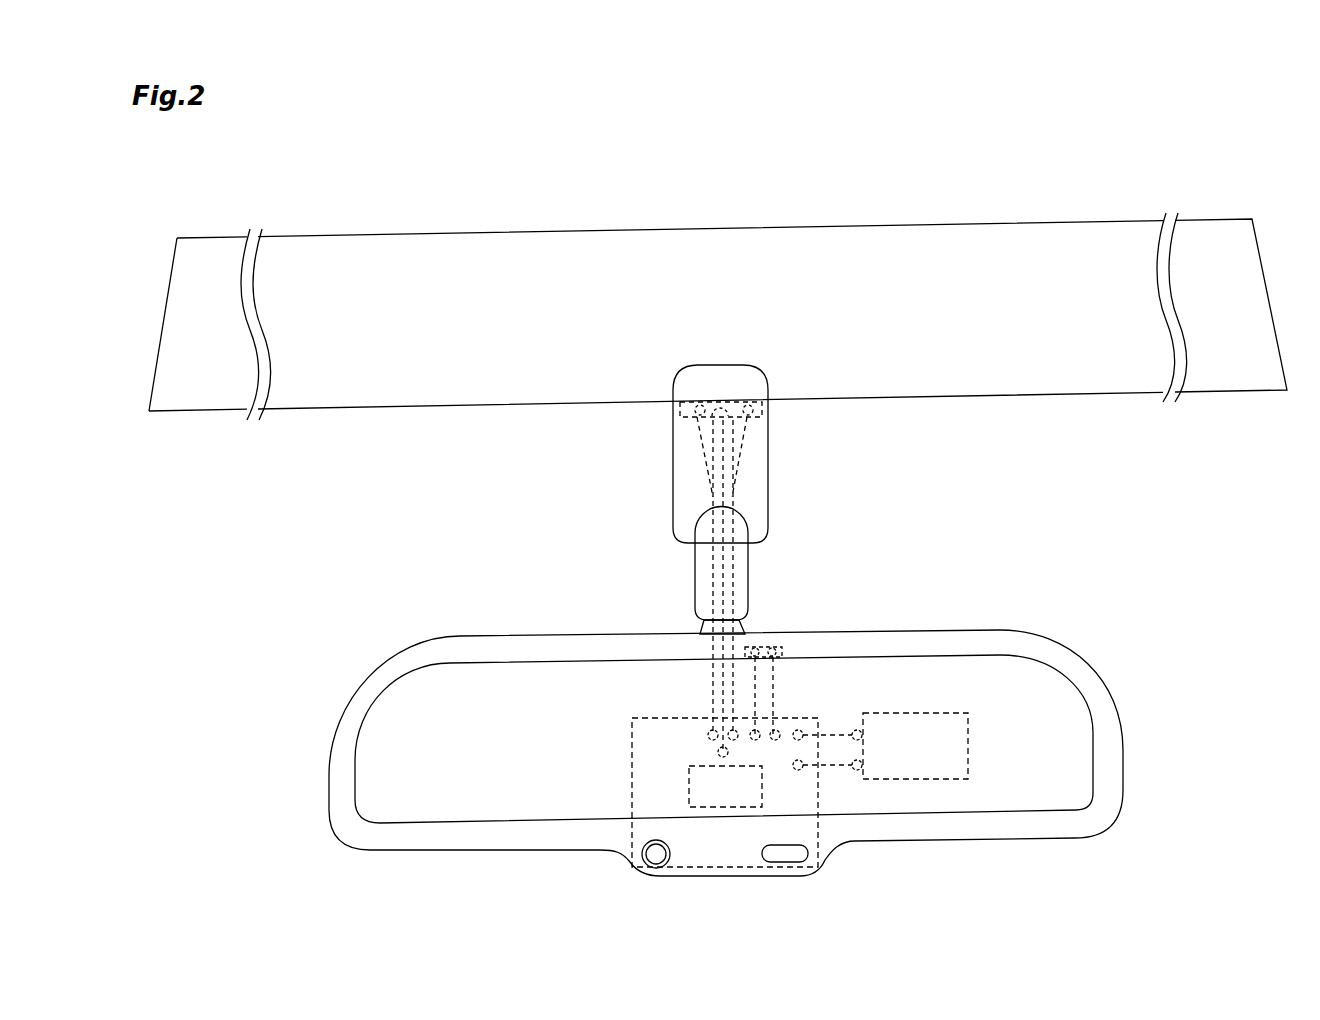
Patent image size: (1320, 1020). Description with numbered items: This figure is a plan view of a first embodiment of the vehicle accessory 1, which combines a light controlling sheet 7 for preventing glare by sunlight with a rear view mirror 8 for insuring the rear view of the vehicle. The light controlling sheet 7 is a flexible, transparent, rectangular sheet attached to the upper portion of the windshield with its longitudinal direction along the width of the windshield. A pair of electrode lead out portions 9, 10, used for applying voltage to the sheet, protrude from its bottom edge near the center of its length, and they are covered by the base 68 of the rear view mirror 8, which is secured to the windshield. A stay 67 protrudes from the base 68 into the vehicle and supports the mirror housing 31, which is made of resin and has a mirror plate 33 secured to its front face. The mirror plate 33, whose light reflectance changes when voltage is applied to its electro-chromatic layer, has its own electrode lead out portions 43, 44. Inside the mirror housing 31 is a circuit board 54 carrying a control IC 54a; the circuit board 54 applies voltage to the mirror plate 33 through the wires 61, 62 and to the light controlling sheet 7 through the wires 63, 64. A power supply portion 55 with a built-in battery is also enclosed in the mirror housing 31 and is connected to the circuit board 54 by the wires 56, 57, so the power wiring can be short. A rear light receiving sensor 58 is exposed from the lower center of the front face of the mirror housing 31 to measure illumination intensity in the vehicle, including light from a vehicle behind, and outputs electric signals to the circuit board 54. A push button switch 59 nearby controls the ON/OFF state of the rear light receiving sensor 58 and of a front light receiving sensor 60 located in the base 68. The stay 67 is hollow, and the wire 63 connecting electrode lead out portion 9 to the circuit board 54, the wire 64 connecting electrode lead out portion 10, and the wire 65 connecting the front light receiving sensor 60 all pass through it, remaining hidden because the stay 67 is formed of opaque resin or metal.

The vehicle accessory 1 is at (822, 162).
The light controlling sheet 7 is at (585, 222).
The rear view mirror 8 is at (920, 546).
The electrode lead out portion 9 is at (680, 408).
The electrode lead out portion 10 is at (768, 410).
The mirror housing 31 is at (950, 643).
The mirror plate 33 is at (1050, 712).
The electrode lead out portion 43 is at (760, 641).
The electrode lead out portion 44 is at (780, 641).
The circuit board 54 is at (645, 778).
The control IC 54a is at (689, 766).
The power supply portion 55 is at (968, 752).
The wire 56 is at (838, 730).
The wire 57 is at (838, 770).
The rear light receiving sensor 58 is at (655, 866).
The push button switch 59 is at (788, 856).
The front light receiving sensor 60 is at (738, 425).
The wire 61 is at (757, 680).
The wire 62 is at (775, 688).
The wire 63 is at (712, 578).
The wire 64 is at (735, 572).
The wire 65 is at (722, 606).
The stay 67 is at (703, 552).
The base 68 is at (688, 480).